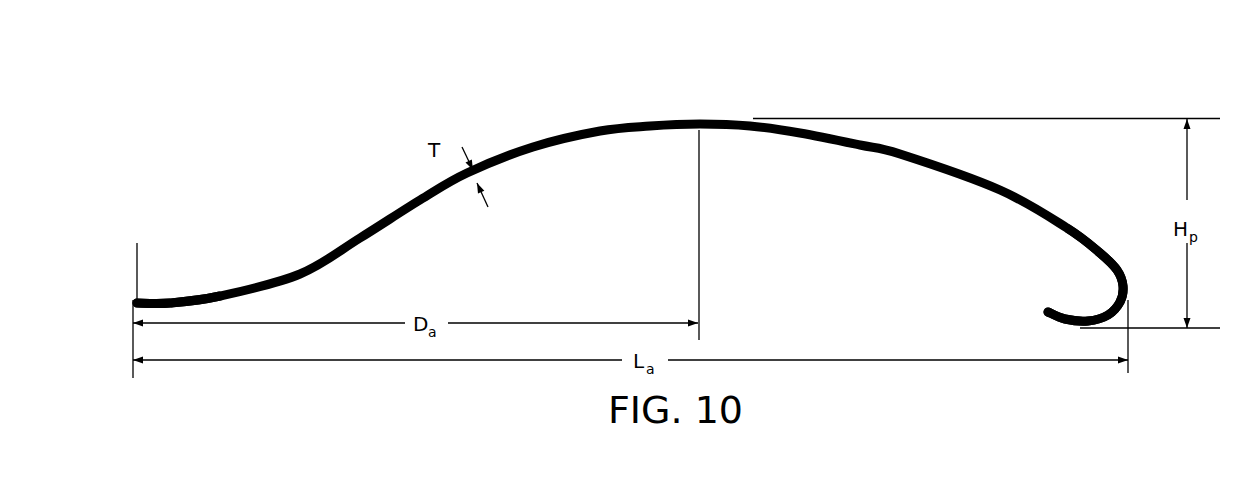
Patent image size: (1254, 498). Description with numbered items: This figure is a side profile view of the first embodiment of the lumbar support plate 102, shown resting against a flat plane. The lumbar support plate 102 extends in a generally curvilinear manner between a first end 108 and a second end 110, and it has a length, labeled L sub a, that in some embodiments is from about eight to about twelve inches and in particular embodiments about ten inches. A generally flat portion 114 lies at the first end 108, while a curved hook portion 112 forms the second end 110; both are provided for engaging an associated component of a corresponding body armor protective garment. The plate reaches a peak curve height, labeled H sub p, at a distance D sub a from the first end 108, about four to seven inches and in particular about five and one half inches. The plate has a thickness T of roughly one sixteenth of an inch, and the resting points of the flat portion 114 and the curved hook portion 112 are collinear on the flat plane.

The lumbar support plate 102 is at (537, 147).
The first end 108 is at (137, 256).
The second end 110 is at (1118, 253).
The curved hook portion 112 is at (1108, 308).
The flat portion 114 is at (168, 297).